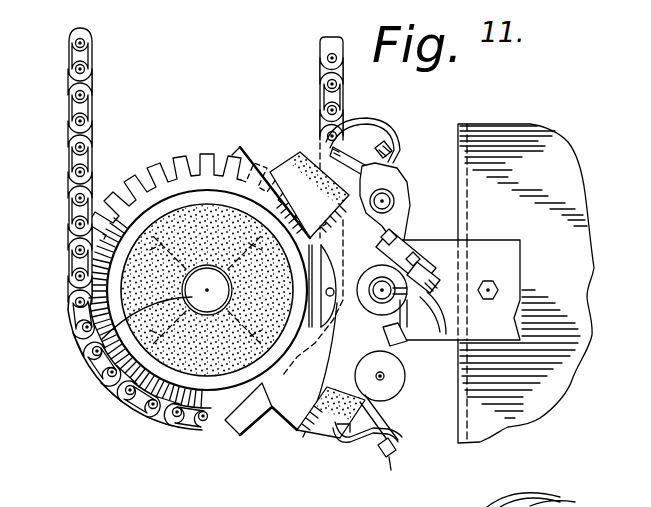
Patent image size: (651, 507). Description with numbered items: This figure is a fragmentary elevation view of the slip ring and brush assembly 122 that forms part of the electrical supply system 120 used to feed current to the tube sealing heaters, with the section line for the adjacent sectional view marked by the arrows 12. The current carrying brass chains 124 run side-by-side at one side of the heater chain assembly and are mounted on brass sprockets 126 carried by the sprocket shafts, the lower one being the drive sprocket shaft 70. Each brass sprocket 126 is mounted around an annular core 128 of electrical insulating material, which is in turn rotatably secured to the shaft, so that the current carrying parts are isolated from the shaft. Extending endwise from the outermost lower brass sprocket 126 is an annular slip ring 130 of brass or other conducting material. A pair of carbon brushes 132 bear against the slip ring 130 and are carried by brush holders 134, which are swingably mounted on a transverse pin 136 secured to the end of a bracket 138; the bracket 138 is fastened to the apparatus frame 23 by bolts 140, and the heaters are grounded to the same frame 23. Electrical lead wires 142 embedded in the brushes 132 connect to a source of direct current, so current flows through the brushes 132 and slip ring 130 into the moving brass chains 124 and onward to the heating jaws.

The main frame 23 is at (526, 283).
The drive sprocket shaft 70 is at (103, 383).
The electrical supply system 120 is at (357, 297).
The slip ring and brush assembly 122 is at (211, 395).
The brass chains 124 is at (90, 112).
The brass sprockets 126 is at (160, 168).
The annular core 128 is at (83, 347).
The slip ring 130 is at (168, 377).
The carbon brushes 132 is at (318, 245).
The brush holders 134 is at (318, 432).
The transverse pin 136 is at (385, 285).
The bracket 138 is at (487, 252).
The bolts 140 is at (499, 290).
The electrical lead wires 142 is at (362, 128).
The section line 12- 12 is at (207, 200).